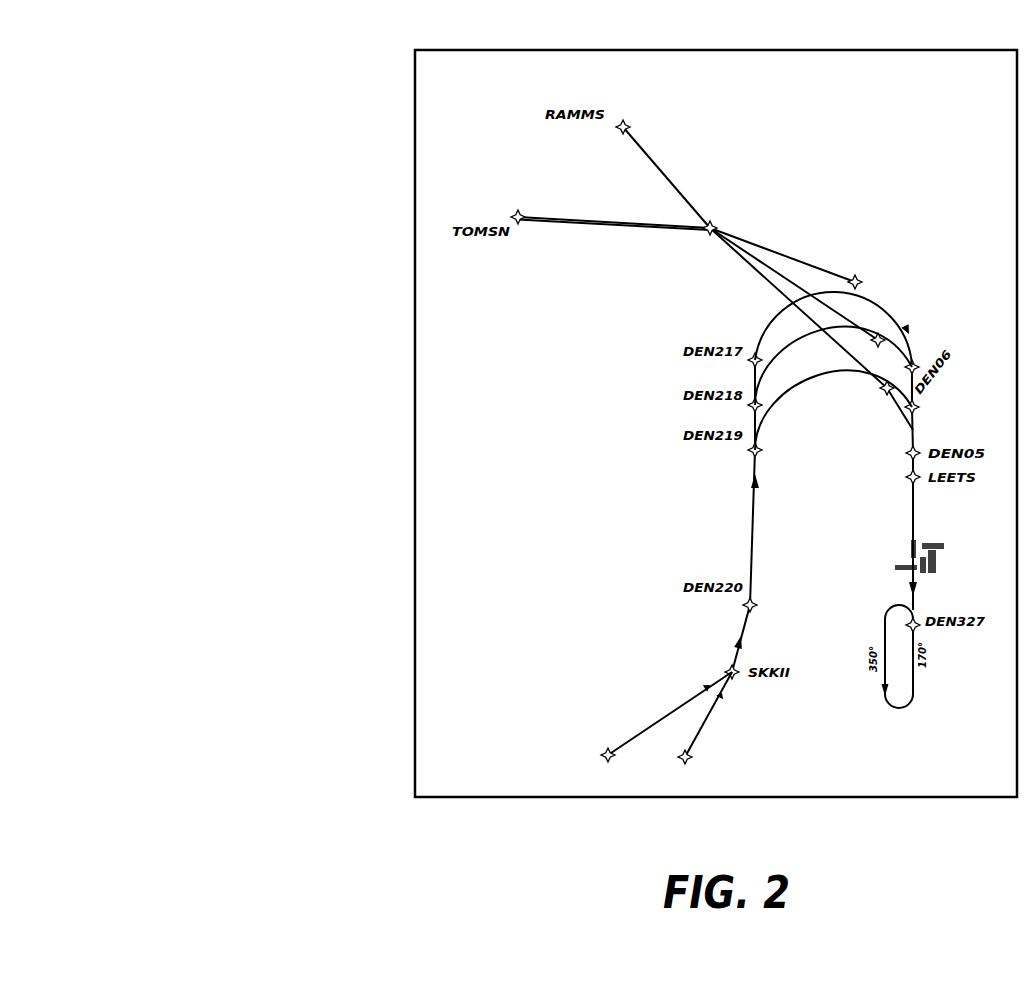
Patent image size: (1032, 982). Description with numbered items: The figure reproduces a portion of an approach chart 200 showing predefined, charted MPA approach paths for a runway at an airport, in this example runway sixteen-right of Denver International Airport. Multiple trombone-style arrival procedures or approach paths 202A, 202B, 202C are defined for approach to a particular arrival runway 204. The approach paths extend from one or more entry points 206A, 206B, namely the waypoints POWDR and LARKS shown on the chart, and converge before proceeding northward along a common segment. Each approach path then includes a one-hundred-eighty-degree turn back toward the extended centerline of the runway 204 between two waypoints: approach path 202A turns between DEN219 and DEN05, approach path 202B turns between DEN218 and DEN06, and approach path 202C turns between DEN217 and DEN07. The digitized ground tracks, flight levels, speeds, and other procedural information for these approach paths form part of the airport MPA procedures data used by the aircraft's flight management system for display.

The flight procedure display 200 is at (203, 73).
The approach path 202A is at (783, 386).
The approach path 202B is at (775, 332).
The approach path 202C is at (760, 330).
The arrival runway 204 is at (909, 546).
The entry point 206A is at (604, 749).
The entry point 206B is at (682, 766).